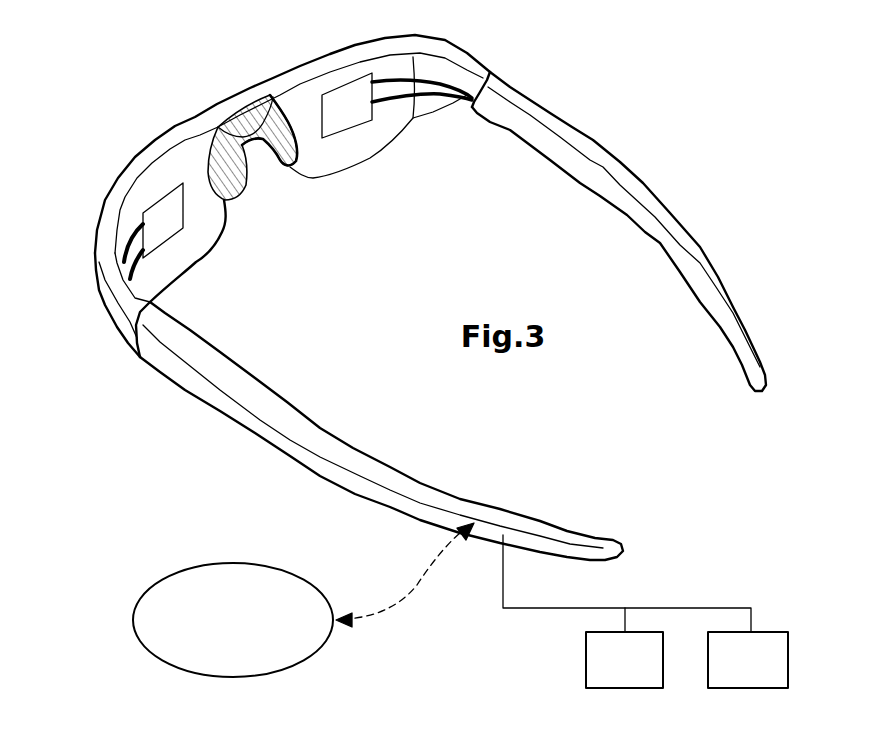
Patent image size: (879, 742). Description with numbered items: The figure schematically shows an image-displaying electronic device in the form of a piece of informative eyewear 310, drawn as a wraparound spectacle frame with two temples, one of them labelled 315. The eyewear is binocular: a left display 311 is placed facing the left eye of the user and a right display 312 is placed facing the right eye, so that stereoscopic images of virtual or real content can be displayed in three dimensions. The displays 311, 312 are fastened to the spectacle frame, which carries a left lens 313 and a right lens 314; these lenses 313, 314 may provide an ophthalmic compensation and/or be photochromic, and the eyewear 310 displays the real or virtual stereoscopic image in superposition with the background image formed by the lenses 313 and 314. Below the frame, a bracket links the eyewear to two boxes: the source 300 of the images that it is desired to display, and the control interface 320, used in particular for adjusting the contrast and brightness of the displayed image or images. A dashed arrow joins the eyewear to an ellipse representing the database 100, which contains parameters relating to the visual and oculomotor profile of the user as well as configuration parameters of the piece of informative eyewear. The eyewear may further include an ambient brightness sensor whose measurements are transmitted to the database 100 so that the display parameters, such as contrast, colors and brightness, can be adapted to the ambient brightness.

The piece of informative eyewear 310 is at (401, 289).
The left display 311 is at (170, 222).
The right display 312 is at (340, 118).
The left lens 313 is at (167, 173).
The right lens 314 is at (297, 100).
The temple 315 is at (470, 65).
The database 100 is at (233, 620).
The source of images 300 is at (624, 660).
The control interface 320 is at (748, 660).